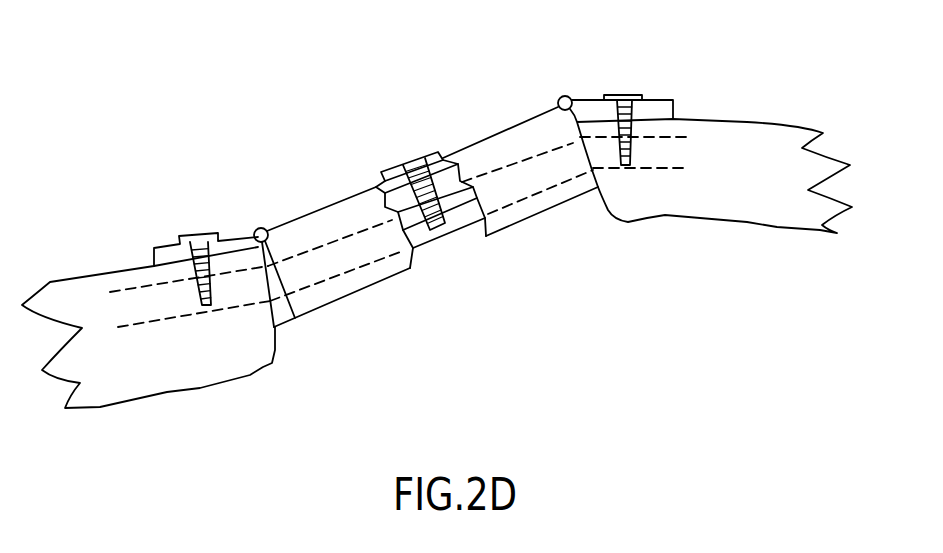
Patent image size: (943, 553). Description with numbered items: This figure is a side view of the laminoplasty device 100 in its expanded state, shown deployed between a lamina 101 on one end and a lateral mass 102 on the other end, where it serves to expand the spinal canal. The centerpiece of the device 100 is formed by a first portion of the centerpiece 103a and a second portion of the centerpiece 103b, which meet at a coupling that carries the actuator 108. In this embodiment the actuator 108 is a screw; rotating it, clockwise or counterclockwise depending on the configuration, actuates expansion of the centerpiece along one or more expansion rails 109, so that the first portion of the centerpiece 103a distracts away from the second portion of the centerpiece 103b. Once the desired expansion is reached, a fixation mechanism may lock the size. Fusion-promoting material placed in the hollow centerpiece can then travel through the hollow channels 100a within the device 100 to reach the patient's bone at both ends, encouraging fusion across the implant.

The device 100 is at (366, 58).
The hollow channels 100a is at (317, 275).
The lamina 101 is at (185, 365).
The lateral mass 102 is at (707, 187).
The first portion of the centerpiece 103a is at (348, 267).
The second portion of the centerpiece 103b is at (540, 185).
The actuator 108 is at (400, 164).
The expansion rails 109 is at (457, 200).